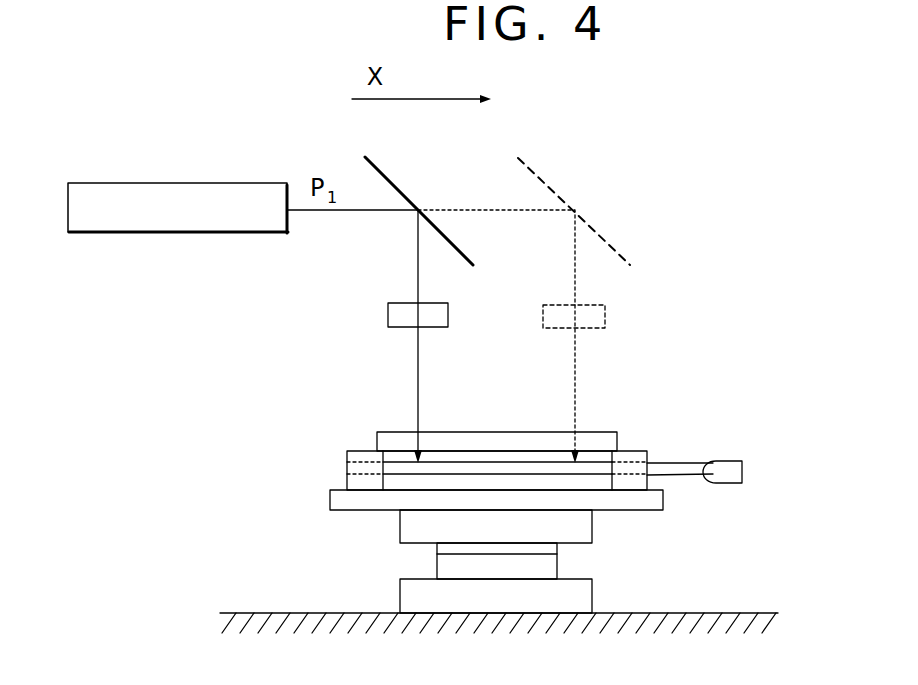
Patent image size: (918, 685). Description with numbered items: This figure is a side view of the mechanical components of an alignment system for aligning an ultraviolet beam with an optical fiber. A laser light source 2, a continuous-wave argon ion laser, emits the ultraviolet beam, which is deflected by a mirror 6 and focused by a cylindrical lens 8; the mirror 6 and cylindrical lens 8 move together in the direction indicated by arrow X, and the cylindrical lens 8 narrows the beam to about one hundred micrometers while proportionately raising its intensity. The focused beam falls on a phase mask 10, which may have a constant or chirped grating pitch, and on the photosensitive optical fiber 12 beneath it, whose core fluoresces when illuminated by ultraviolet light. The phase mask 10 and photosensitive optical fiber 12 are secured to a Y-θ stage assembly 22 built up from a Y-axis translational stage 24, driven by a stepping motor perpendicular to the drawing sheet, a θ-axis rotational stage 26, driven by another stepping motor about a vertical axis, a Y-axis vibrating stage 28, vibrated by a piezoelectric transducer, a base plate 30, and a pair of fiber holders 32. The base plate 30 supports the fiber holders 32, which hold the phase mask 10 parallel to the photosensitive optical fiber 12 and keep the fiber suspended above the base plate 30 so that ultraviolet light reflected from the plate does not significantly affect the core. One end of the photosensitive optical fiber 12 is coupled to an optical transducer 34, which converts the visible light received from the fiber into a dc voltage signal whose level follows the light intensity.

The laser light source 2 is at (191, 183).
The mirror 6 is at (377, 168).
The cylindrical lens 8 is at (388, 315).
The phase mask 10 is at (388, 437).
The photosensitive optical fiber 12 is at (587, 470).
The Y-θ stage assembly 22 is at (238, 432).
The Y-axis translational stage 24 is at (400, 595).
The θ-axis rotational stage 26 is at (437, 567).
The Y-axis vibrating stage 28 is at (400, 527).
The base plate 30 is at (330, 500).
The fiber holders 32 is at (347, 463).
The optical transducer 34 is at (727, 461).